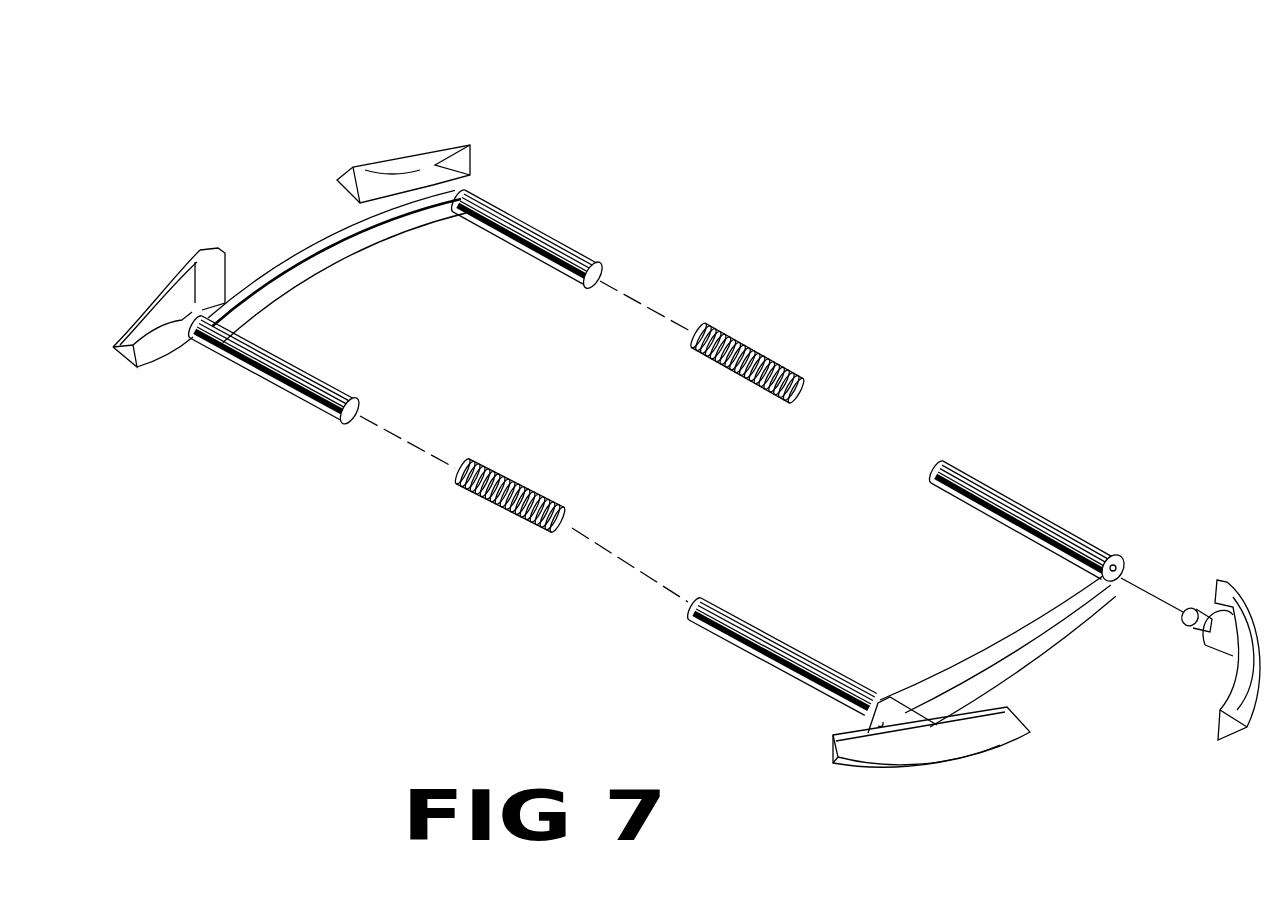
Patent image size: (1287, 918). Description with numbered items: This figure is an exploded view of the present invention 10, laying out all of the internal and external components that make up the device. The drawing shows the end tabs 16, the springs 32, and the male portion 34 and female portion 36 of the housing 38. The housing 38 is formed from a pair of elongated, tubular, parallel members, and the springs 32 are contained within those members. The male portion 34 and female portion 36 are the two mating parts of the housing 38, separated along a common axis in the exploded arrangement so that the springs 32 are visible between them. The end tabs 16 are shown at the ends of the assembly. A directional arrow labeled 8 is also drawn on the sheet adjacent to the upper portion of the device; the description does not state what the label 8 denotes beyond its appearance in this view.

The viewing direction arrow 8 is at (503, 110).
The present invention 10 is at (905, 312).
The end tab 16 is at (345, 177).
The spring 32 is at (535, 488).
The male portion 34 is at (535, 218).
The female portion 36 is at (1047, 500).
The housing 38 is at (957, 452).